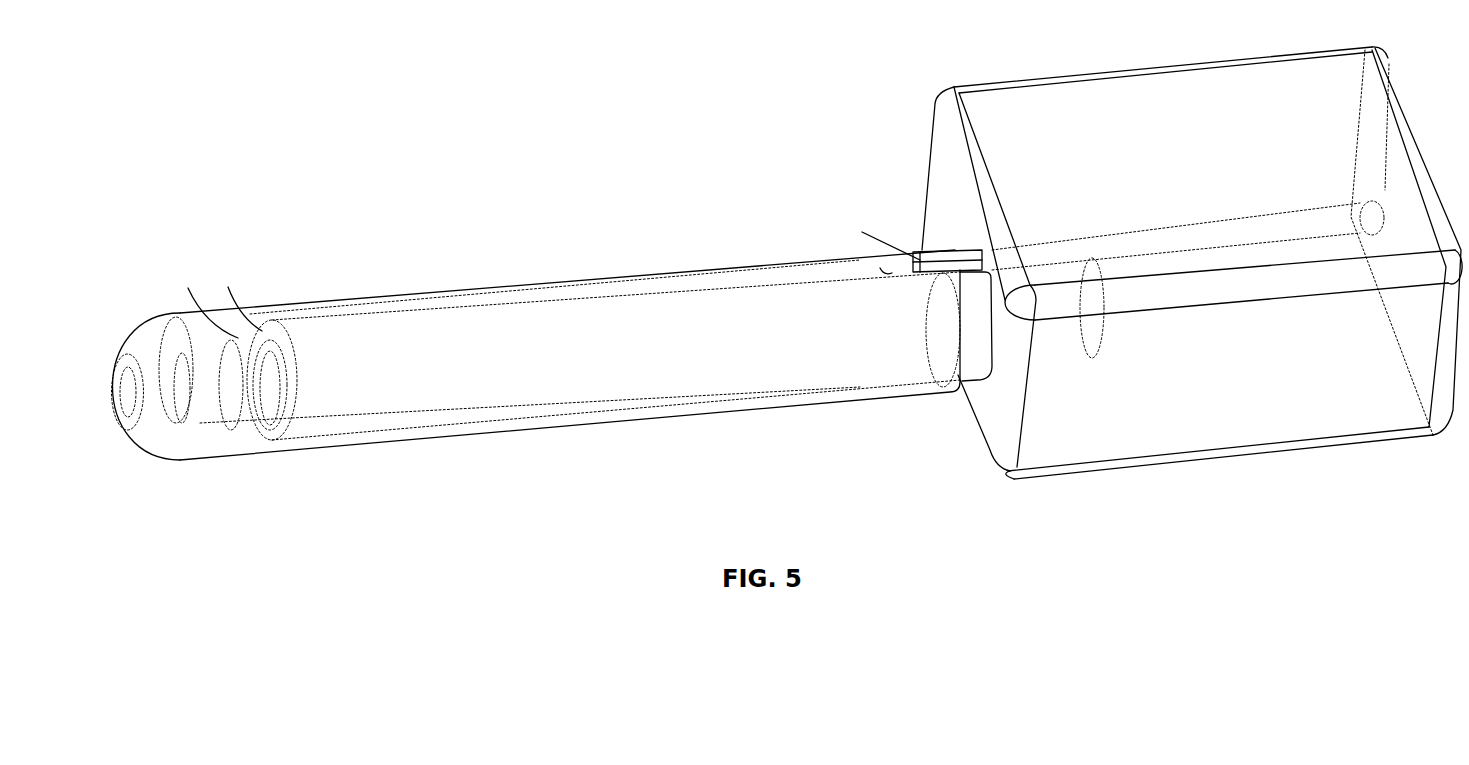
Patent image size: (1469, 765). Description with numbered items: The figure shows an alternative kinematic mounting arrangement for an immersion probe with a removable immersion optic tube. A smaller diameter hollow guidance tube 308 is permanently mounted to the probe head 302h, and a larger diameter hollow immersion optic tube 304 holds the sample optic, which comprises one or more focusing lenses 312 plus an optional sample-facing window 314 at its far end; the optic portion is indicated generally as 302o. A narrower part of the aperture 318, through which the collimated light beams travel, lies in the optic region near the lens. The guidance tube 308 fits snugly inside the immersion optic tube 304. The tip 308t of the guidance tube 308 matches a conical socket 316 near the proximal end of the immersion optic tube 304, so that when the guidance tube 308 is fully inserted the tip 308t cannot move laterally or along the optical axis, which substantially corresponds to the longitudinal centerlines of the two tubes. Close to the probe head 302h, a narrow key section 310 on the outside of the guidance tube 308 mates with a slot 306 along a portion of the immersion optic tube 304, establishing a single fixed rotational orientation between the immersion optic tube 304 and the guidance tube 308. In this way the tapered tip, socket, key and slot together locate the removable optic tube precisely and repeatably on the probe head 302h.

The probe head 302h is at (1166, 66).
The optical probe portion 302o is at (588, 270).
The immersion optic tube 304 is at (447, 435).
The slot 306 is at (887, 275).
The guidance tube 308 is at (715, 370).
The tip of the small tube 308t is at (270, 327).
The key section 310 is at (965, 260).
The focusing lens 312 is at (182, 403).
The sample-facing window 314 is at (125, 408).
The conical socket 316 is at (255, 422).
The narrower part of the aperture 318 is at (225, 415).